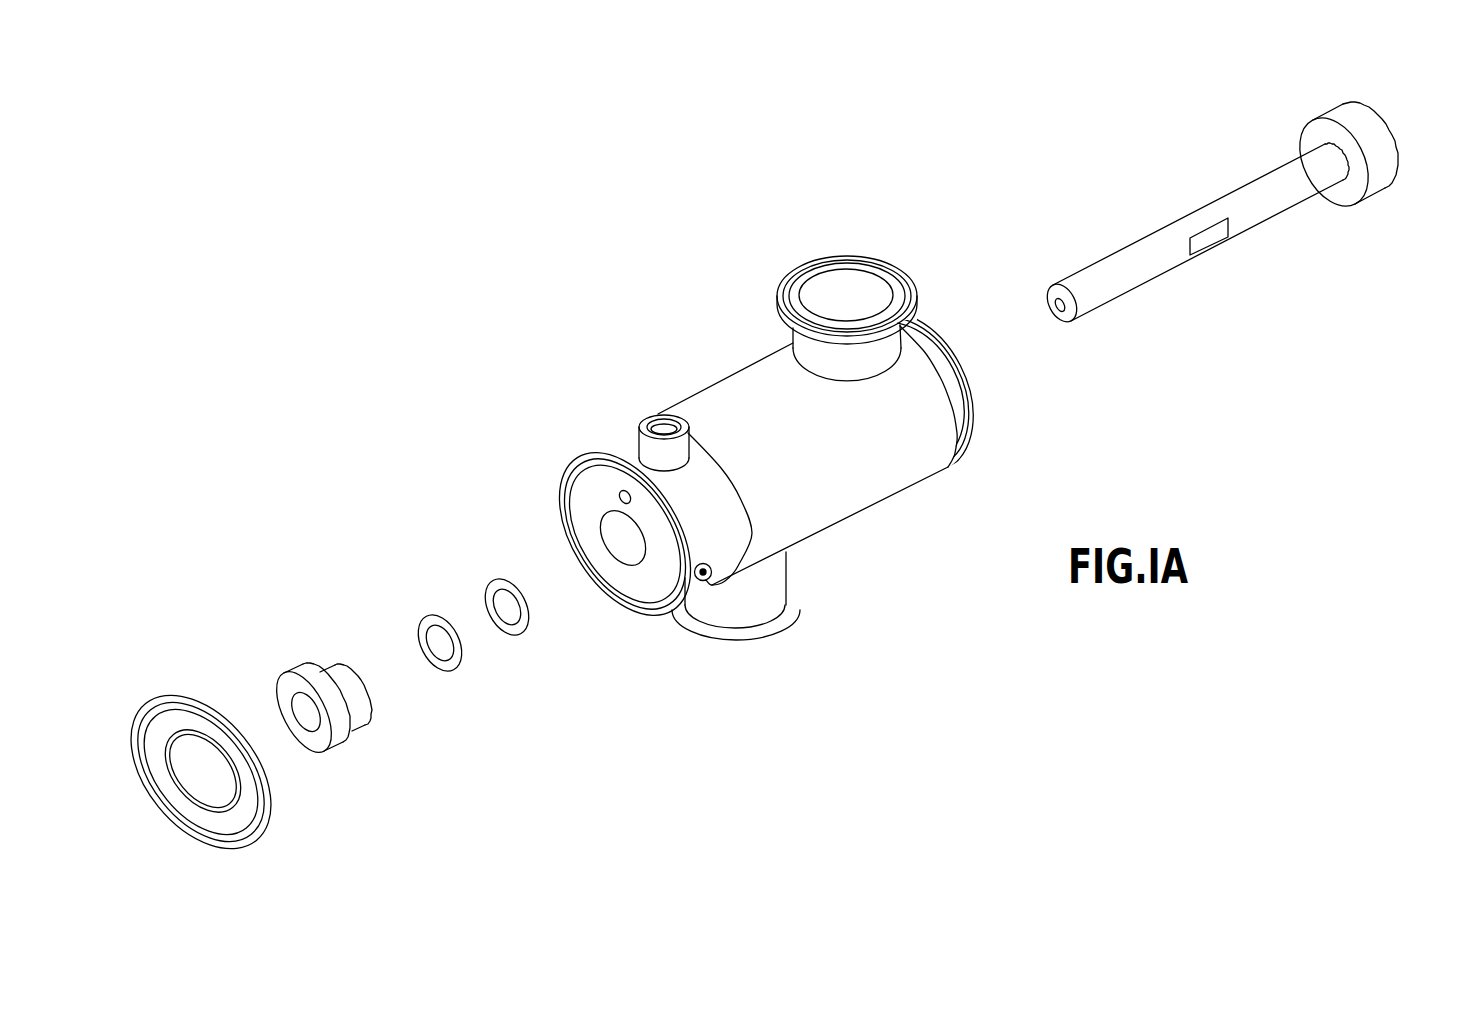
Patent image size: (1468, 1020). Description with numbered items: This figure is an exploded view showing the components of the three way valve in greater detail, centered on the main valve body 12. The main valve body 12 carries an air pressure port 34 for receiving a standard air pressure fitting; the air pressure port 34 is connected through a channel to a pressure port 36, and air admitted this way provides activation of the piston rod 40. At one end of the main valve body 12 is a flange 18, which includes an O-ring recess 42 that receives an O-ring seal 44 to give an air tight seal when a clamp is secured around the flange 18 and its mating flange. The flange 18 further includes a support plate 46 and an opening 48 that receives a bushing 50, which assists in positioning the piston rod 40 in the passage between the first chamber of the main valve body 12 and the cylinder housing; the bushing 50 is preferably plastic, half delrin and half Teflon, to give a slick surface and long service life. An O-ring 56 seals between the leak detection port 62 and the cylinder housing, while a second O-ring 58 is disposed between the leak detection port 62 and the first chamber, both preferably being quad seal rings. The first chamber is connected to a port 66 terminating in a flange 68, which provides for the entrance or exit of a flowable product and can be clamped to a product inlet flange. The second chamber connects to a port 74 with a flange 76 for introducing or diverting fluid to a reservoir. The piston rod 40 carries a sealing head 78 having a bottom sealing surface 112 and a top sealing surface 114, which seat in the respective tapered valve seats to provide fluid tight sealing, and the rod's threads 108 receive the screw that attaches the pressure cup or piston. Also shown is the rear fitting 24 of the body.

The main valve body 12 is at (836, 469).
The flange 18 is at (604, 543).
The outlet ferrule fitting 24 is at (977, 408).
The air pressure port 34 is at (655, 412).
The pressure port 36 is at (620, 495).
The piston rod 40 is at (1150, 263).
The O-ring recess 42 is at (585, 517).
The O-ring seal 44 is at (190, 695).
The support plate 46 is at (608, 589).
The opening 48 is at (607, 547).
The bushing 50 is at (314, 670).
The O-ring 56 is at (430, 614).
The second O-ring 58 is at (493, 578).
The leak detection port 62 is at (697, 581).
The port 66 is at (773, 580).
The flange 68 is at (800, 608).
The port 74 is at (802, 343).
The flange 76 is at (897, 268).
The sealing head 78 is at (1348, 170).
The threads 108 is at (1049, 292).
The bottom sealing surface 112 is at (1387, 148).
The top sealing surface 114 is at (1352, 188).